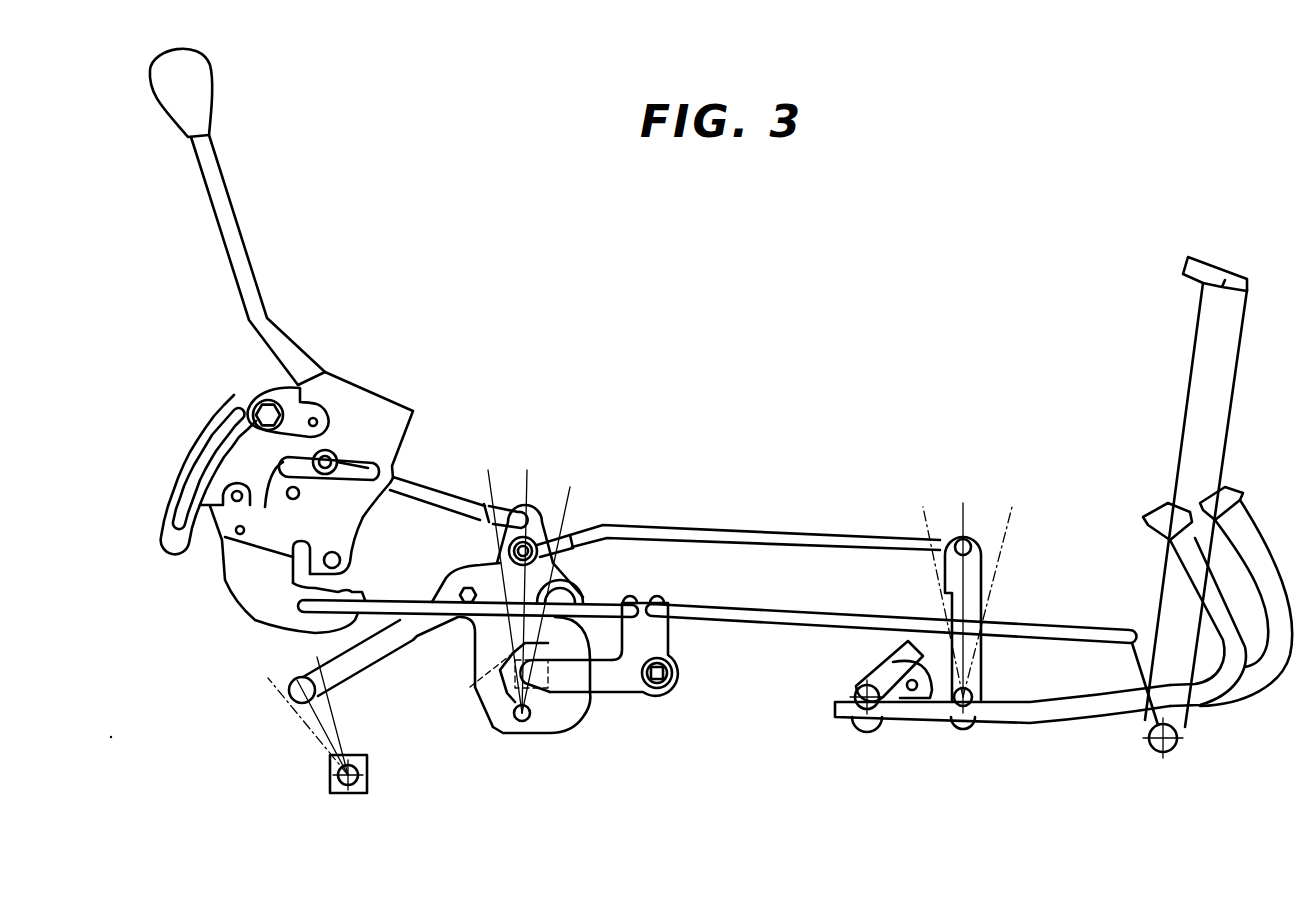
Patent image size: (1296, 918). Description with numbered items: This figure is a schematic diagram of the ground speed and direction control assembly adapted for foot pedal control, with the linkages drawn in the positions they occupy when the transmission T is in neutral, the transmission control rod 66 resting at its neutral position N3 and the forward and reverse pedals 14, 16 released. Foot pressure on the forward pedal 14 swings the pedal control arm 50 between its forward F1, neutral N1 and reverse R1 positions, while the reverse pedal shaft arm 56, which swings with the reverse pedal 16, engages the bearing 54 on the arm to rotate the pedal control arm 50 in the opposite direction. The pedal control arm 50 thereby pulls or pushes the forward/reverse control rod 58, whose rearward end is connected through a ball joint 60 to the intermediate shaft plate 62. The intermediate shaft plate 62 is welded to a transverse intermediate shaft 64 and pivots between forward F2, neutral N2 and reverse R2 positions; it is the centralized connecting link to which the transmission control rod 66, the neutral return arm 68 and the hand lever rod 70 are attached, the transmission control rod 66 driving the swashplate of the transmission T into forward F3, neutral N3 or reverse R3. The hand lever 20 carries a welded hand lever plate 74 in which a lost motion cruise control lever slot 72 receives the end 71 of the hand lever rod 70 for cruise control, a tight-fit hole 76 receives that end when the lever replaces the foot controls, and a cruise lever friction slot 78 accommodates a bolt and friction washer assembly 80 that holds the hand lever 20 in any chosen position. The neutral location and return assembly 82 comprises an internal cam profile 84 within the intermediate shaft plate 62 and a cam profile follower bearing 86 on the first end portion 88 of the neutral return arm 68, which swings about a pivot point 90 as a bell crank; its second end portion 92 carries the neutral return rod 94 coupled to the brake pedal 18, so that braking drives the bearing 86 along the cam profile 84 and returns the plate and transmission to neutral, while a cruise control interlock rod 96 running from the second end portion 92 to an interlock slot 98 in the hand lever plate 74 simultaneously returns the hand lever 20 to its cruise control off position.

The hand lever 20 is at (231, 205).
The hand lever plate 74 is at (355, 394).
The bolt and friction washer assembly 80 is at (268, 410).
The cruise lever friction slot 78 is at (200, 453).
The hand lever rod 70 is at (415, 478).
The lost motion cruise control lever slot 72 is at (282, 547).
The tight-fit hole 76 is at (297, 497).
The end of hand lever rod 71 is at (330, 470).
The cruise control interlock rod 96 is at (391, 600).
The interlock slot 98 is at (300, 604).
The transmission control rod 66 is at (434, 627).
The neutral position of transmission N3 is at (297, 675).
The forward position of transmission F3 is at (330, 695).
The reverse position of transmission R3 is at (290, 708).
The transmission T is at (360, 795).
The cam profile follower bearing 86 is at (507, 657).
The transverse intermediate shaft 64 is at (513, 720).
The first end portion of neutral return arm 88 is at (548, 690).
The intermediate shaft plate 62 is at (563, 717).
The neutral location and return assembly 82 is at (618, 712).
The neutral return arm 68 is at (630, 693).
The pivot point 90 is at (680, 677).
The second end portion of neutral return arm 92 is at (660, 635).
The internal cam profile 84 is at (573, 593).
The neutral return rod 94 is at (748, 608).
The forward/reverse control rod 58 is at (722, 532).
The ball joint 60 is at (572, 547).
The reverse position of intermediate shaft plate R2 is at (487, 479).
The neutral position of intermediate shaft plate N2 is at (530, 483).
The forward position of intermediate shaft plate F2 is at (570, 487).
The reverse position of pedal control arm R1 is at (920, 517).
The neutral position of pedal control arm N1 is at (960, 517).
The forward position of pedal control arm F1 is at (1008, 518).
The pedal control arm 50 is at (974, 582).
The reverse pedal shaft arm 56 is at (878, 665).
The bearing 54 is at (901, 705).
The brake pedal 18 is at (1203, 353).
The reverse pedal 16 is at (1183, 552).
The forward pedal 14 is at (1244, 518).